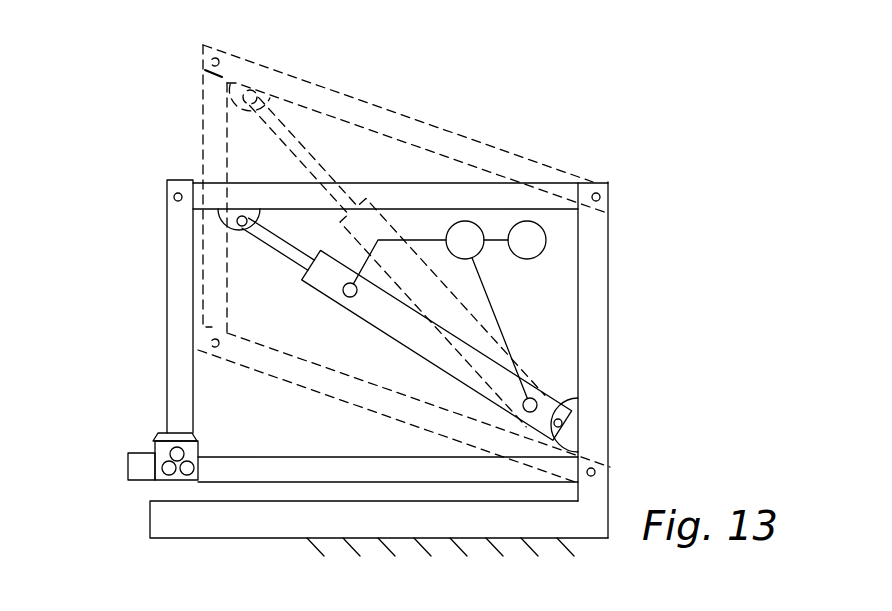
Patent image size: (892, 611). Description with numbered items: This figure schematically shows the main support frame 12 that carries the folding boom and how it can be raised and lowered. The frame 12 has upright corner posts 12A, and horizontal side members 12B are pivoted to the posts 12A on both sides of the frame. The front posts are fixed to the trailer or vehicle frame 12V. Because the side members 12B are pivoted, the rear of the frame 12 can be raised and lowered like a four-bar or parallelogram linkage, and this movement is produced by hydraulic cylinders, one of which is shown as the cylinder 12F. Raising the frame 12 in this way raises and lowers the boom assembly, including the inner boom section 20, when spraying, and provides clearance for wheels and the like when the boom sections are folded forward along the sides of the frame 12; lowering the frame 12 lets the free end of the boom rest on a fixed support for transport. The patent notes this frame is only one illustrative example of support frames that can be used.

The main support frame 12 is at (140, 305).
The upright corner post 12A is at (177, 242).
The horizontal side member 12B is at (418, 197).
The hydraulic cylinder 12F is at (368, 303).
The trailer or vehicle frame 12V is at (217, 513).
The inner boom section 20 is at (168, 482).